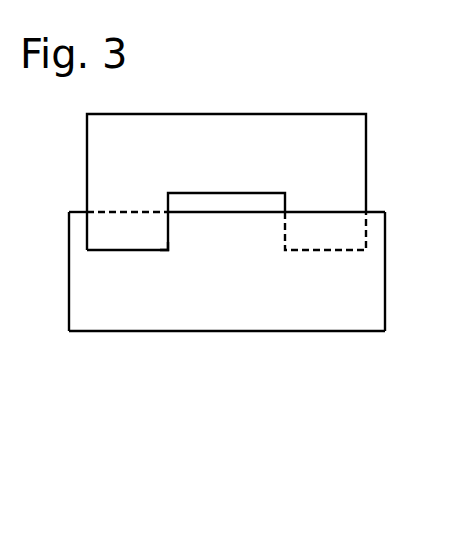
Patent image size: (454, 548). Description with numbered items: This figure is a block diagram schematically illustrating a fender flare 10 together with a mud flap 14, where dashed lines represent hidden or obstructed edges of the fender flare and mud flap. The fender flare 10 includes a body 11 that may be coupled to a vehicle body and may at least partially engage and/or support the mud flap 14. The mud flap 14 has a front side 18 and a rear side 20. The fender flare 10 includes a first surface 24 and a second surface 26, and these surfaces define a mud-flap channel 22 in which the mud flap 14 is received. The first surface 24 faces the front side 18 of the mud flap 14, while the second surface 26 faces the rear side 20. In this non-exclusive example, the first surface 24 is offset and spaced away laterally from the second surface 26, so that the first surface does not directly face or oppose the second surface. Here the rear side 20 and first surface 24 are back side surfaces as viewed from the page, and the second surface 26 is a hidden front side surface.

The fender flare 10 is at (194, 86).
The body 11 is at (243, 113).
The mud flap 14 is at (130, 332).
The front side 18 is at (246, 312).
The rear side 20 is at (368, 313).
The mud-flap channel 22 is at (79, 233).
The first surface 24 is at (147, 233).
The second surface 26 is at (357, 237).